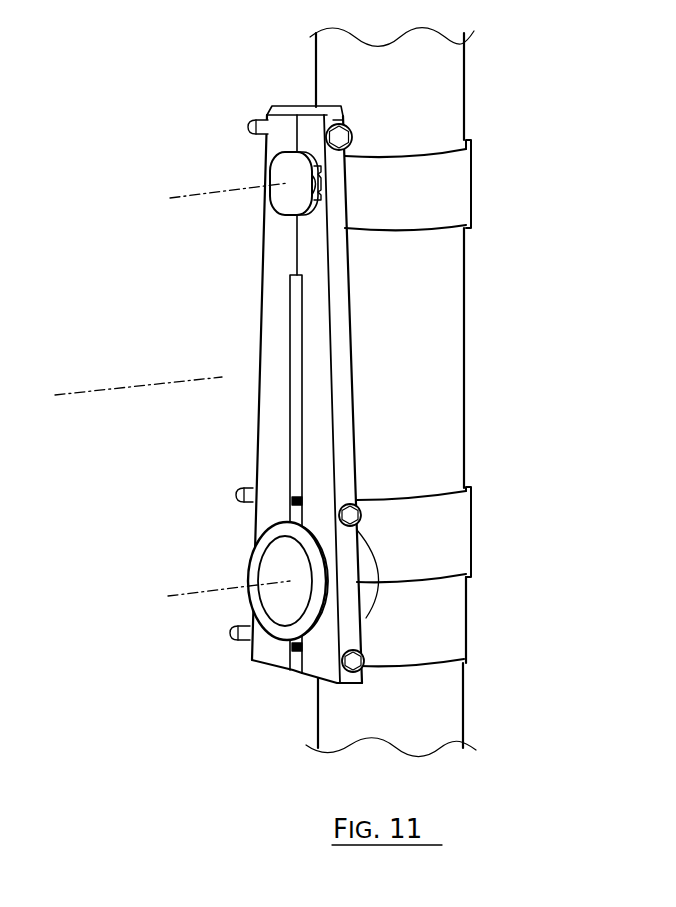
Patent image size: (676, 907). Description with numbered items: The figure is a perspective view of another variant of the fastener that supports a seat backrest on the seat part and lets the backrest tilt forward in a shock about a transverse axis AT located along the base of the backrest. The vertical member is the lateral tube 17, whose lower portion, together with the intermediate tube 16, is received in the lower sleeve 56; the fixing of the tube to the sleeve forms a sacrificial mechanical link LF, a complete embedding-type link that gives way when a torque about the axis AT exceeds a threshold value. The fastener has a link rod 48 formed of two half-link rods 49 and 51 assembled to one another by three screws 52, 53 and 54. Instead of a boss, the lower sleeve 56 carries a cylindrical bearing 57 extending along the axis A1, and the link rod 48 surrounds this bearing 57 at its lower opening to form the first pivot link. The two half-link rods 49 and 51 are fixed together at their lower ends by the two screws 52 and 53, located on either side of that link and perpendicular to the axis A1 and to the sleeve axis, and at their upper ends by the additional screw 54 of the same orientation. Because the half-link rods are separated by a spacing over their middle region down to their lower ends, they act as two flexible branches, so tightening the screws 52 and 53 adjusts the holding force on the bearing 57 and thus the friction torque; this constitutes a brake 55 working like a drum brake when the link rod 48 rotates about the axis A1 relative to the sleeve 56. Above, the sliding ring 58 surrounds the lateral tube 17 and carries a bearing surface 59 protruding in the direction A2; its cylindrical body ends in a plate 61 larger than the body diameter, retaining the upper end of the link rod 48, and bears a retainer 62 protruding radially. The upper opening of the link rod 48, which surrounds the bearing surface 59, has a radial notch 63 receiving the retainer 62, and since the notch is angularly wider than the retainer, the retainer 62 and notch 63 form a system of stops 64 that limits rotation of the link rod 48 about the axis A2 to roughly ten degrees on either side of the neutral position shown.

The intermediate tube 16 is at (338, 722).
The lateral tube 17 is at (332, 87).
The link rod 48 is at (392, 413).
The half-link rod 49 is at (267, 320).
The half-link rod 51 is at (343, 343).
The screw 52 is at (232, 638).
The screw 53 is at (236, 495).
The additional screw 54 is at (248, 124).
The brake 55 is at (348, 610).
The lower sleeve 56 is at (456, 602).
The cylindrical bearing 57 is at (275, 570).
The sliding ring 58 is at (455, 192).
The bearing surface 59 is at (243, 178).
The plate 61 is at (278, 172).
The retainer 62 is at (322, 185).
The radial notch 63 is at (323, 200).
The system of stops 64 is at (317, 150).
The axis of the first pivot link A1 is at (183, 595).
The direction of the second pivot link A2 is at (200, 194).
The transverse axis AT is at (80, 390).
The sacrificial mechanical link LF is at (497, 519).